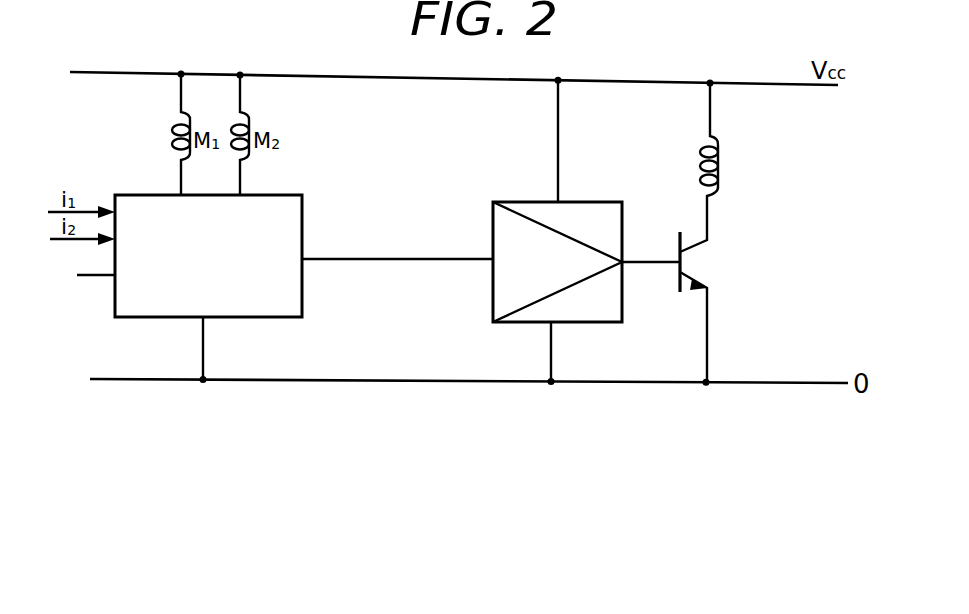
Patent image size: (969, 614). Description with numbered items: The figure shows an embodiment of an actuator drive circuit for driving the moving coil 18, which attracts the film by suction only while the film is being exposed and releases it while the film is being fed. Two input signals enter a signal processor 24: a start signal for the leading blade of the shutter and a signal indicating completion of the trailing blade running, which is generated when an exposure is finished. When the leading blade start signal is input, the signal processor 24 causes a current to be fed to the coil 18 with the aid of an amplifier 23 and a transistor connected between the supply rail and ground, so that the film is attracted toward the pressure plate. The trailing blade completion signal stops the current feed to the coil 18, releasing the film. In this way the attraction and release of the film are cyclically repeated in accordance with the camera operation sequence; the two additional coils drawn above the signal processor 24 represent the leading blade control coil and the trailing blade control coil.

The moving coil 18 is at (721, 143).
The amplifier 23 is at (581, 220).
The signal processor 24 is at (139, 304).